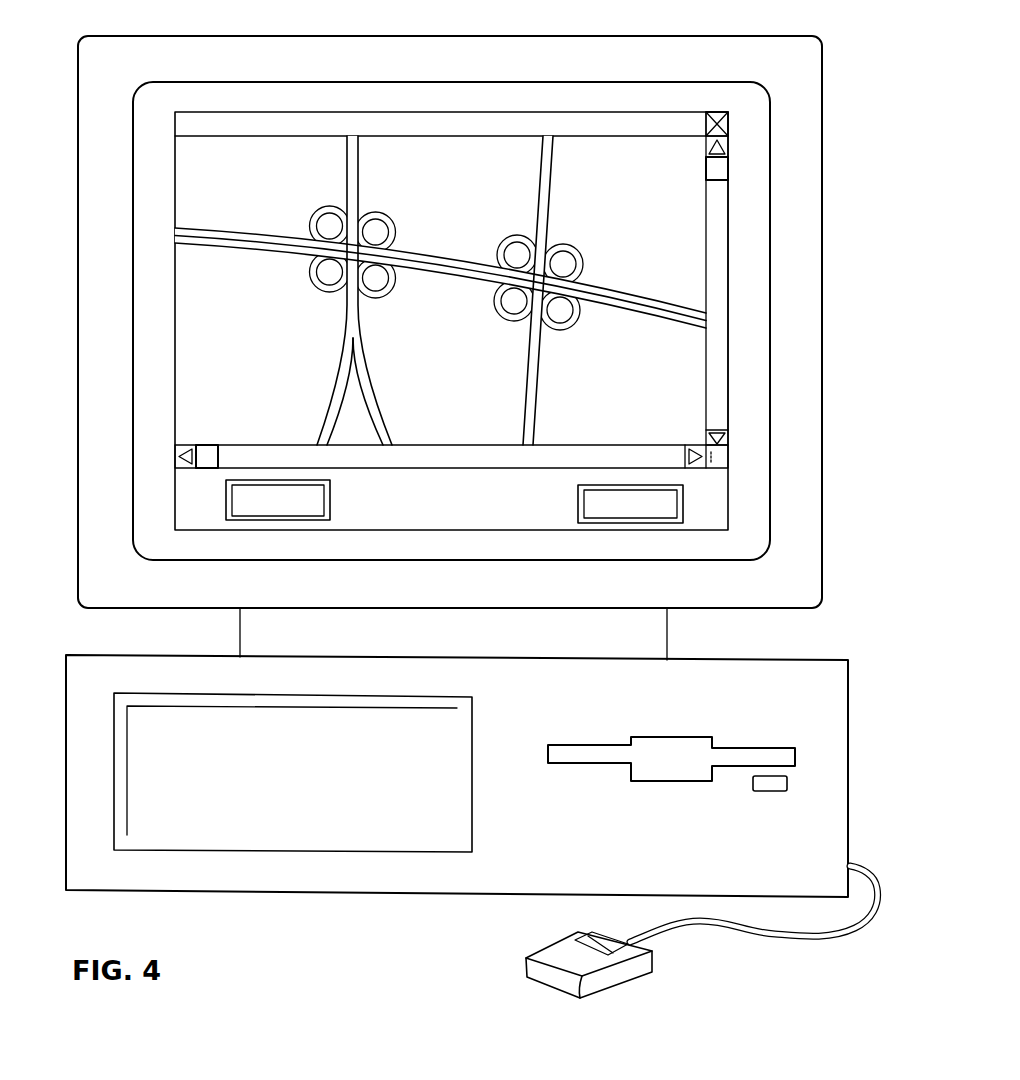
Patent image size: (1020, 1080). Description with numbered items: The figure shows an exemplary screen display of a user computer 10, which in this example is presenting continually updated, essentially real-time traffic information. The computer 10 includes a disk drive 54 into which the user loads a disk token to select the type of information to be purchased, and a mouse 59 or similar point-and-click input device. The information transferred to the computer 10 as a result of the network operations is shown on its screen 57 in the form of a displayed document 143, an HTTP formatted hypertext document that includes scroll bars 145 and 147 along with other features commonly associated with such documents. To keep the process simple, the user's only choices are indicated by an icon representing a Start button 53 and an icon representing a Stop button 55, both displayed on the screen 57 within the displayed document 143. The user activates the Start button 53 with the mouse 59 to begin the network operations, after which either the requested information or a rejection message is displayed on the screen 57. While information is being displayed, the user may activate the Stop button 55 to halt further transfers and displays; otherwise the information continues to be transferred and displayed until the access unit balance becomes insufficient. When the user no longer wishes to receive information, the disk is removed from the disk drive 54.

The computer 10 is at (366, 902).
The Start button 53 is at (278, 522).
The disk drive 54 is at (668, 782).
The Stop button 55 is at (632, 524).
The screen 57 is at (760, 433).
The mouse 59 is at (623, 983).
The displayed document 143 is at (188, 326).
The scroll bar 145 is at (722, 262).
The scroll bar 147 is at (427, 466).